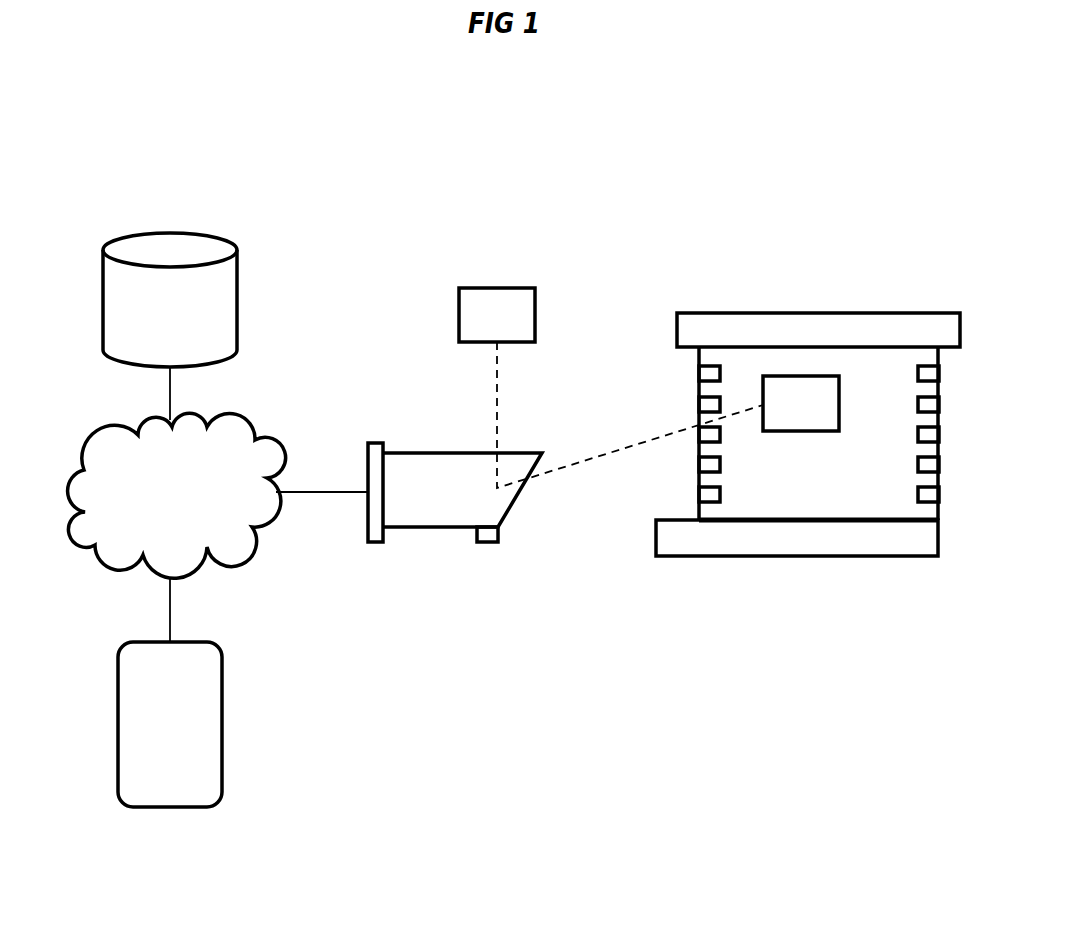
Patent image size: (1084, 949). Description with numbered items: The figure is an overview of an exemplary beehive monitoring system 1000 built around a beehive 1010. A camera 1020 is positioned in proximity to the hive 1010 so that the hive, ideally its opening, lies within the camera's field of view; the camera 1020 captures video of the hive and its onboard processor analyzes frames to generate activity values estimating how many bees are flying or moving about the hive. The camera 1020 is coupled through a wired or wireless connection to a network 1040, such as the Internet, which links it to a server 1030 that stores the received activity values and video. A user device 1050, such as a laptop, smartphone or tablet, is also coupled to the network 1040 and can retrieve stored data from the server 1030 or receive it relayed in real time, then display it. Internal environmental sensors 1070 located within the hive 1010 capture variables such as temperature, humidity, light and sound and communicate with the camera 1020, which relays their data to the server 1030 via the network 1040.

The system 1000 is at (504, 160).
The beehive 1010 is at (798, 556).
The camera 1020 is at (434, 527).
The server 1030 is at (237, 300).
The network 1040 is at (232, 560).
The user device 1050 is at (170, 807).
The internal environmental sensors 1070 is at (535, 312).